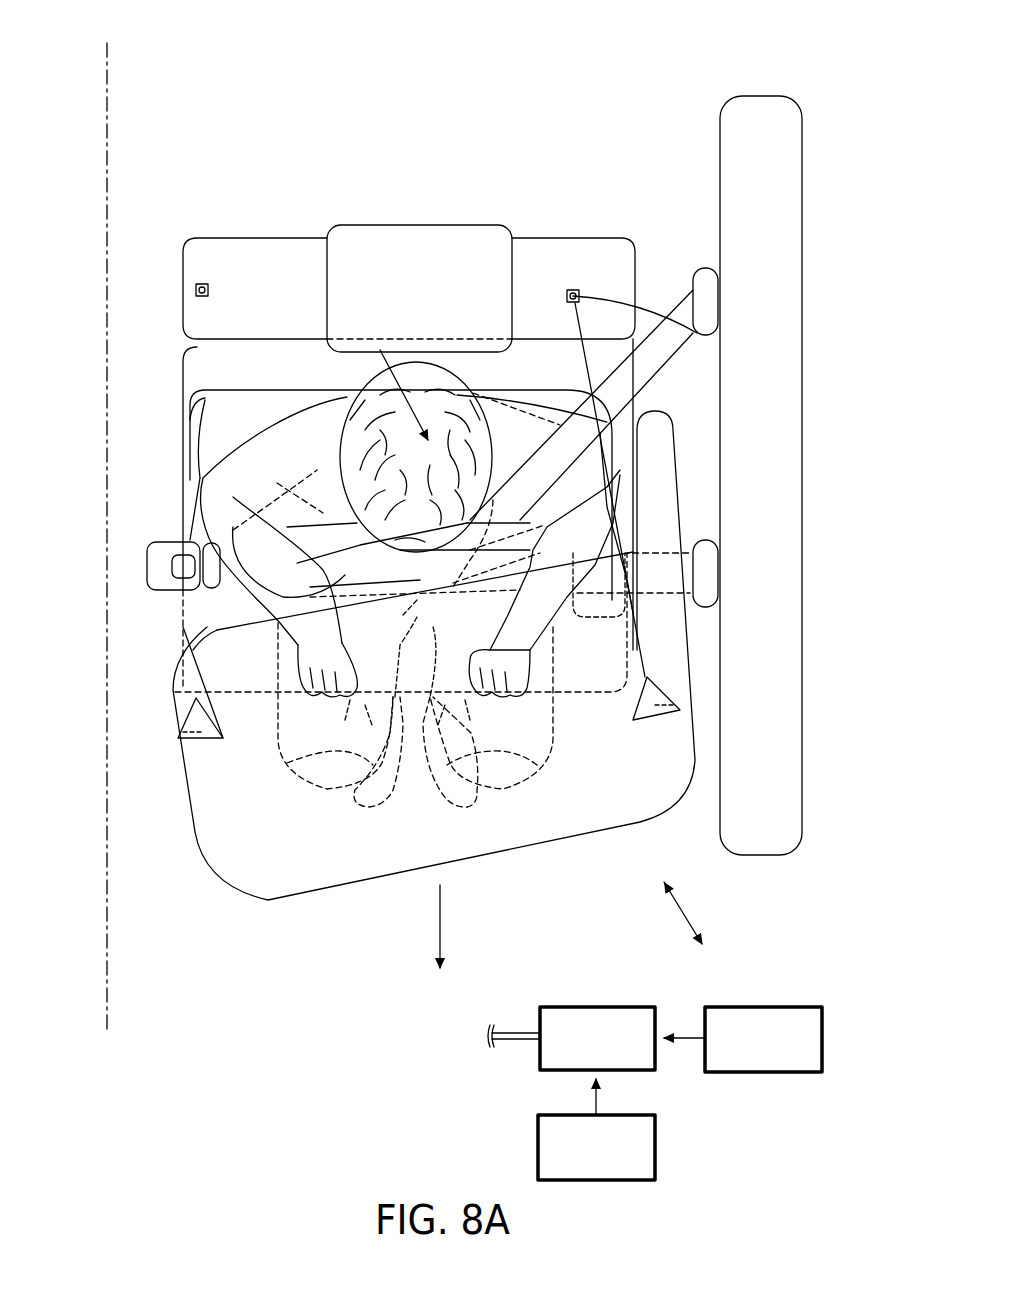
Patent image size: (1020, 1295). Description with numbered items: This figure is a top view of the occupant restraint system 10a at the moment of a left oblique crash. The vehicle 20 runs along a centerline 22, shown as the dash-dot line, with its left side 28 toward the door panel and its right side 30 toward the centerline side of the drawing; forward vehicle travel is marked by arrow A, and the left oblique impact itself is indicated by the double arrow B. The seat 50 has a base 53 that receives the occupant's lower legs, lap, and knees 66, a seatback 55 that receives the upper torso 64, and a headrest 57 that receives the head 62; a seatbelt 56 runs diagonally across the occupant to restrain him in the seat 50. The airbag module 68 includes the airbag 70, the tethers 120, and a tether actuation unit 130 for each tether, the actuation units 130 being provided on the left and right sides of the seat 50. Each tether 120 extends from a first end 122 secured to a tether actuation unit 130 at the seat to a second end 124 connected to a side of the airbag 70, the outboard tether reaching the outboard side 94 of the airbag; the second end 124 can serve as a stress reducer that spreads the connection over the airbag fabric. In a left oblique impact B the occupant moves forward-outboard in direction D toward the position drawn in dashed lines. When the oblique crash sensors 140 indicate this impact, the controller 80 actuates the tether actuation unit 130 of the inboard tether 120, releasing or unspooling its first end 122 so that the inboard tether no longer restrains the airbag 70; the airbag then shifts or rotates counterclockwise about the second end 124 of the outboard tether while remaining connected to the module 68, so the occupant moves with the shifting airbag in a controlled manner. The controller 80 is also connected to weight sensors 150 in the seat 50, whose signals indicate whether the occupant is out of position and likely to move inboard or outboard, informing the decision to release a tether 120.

The occupant restraint system 10a is at (354, 934).
The vehicle 20 is at (800, 56).
The centerline 22 is at (107, 346).
The left side 28 is at (822, 390).
The right side 30 is at (76, 210).
The seat 50 is at (246, 228).
The base 53 is at (188, 372).
The seatback 55 is at (620, 258).
The seatbelt 56 is at (660, 350).
The headrest 57 is at (425, 245).
The head 62 is at (345, 452).
The upper torso 64 is at (297, 390).
The lower legs/lap/knees 66 is at (322, 778).
The airbag module 68 is at (600, 628).
The airbag 70 is at (558, 872).
The controller 80 is at (598, 1007).
The outboard side 94 is at (655, 648).
The tether 120 is at (200, 478).
The first end 122 is at (720, 342).
The second end 124 is at (190, 722).
The tether actuation unit 130 is at (196, 290).
The oblique crash sensor 140 is at (764, 1007).
The weight sensor 150 is at (538, 1146).
The arrow A is at (440, 925).
The left oblique impact B is at (685, 912).
The direction D is at (420, 392).